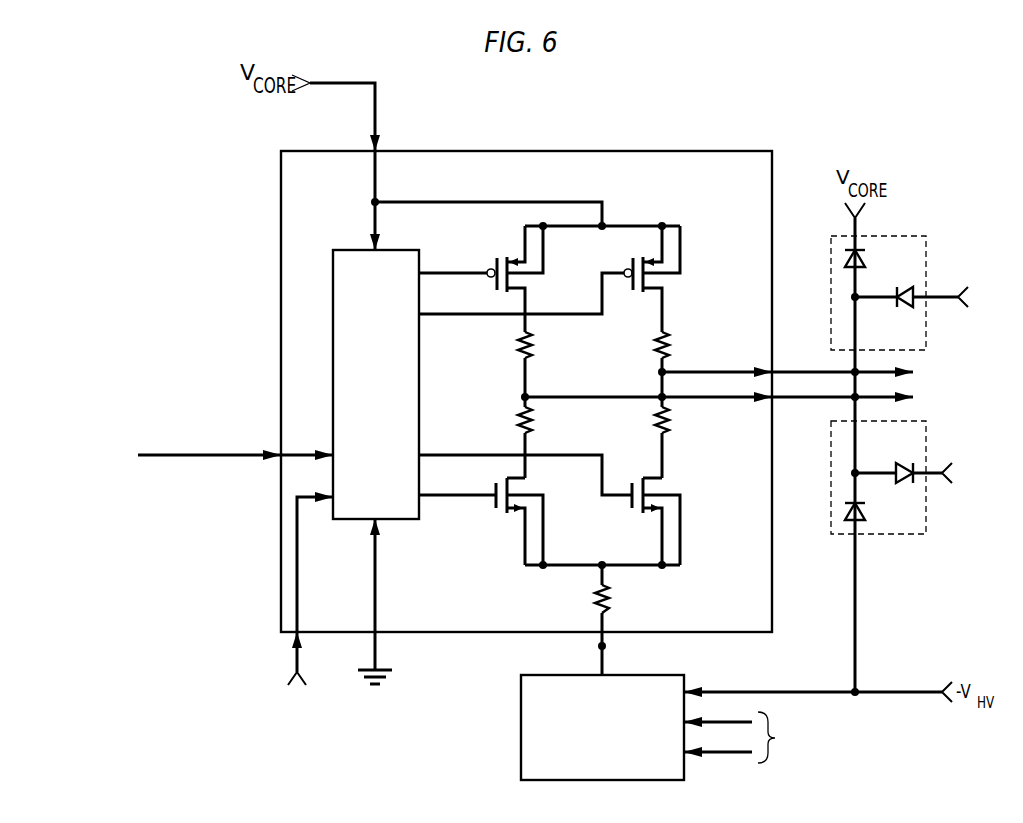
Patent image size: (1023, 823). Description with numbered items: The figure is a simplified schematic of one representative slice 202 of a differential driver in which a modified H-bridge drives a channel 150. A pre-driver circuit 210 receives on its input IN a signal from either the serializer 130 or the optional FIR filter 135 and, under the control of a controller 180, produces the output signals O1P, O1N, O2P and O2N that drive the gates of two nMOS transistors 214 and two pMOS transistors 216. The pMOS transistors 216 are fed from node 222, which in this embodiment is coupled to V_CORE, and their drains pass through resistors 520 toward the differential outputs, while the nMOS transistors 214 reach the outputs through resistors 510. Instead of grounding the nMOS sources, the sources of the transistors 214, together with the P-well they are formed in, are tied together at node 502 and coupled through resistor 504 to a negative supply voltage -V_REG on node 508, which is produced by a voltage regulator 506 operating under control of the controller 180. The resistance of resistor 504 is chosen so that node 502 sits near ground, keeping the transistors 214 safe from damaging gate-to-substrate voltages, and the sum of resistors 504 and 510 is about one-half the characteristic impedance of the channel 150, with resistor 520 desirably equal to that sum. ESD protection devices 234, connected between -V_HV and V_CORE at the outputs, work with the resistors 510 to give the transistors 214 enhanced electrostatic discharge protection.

The serializer 130 is at (186, 455).
The optional FIR filter 135 is at (83, 528).
The channel 150 is at (770, 386).
The controller 180 is at (563, 633).
The slice 202 is at (740, 151).
The pre-driver circuit 210 is at (357, 522).
The nMOS transistor 214 is at (522, 492).
The pMOS transistor 216 is at (487, 280).
The node 222 is at (602, 230).
The electrostatic discharge (ESD) protection devices 234 is at (926, 260).
The node 502 is at (602, 570).
The resistor 504 is at (612, 602).
The voltage regulator 506 is at (521, 752).
The node 508 is at (604, 646).
The resistor 510 is at (517, 420).
The resistor 520 is at (517, 345).